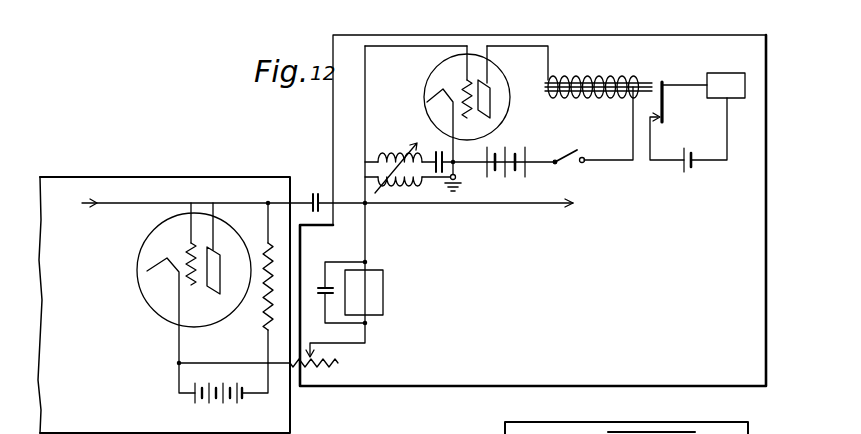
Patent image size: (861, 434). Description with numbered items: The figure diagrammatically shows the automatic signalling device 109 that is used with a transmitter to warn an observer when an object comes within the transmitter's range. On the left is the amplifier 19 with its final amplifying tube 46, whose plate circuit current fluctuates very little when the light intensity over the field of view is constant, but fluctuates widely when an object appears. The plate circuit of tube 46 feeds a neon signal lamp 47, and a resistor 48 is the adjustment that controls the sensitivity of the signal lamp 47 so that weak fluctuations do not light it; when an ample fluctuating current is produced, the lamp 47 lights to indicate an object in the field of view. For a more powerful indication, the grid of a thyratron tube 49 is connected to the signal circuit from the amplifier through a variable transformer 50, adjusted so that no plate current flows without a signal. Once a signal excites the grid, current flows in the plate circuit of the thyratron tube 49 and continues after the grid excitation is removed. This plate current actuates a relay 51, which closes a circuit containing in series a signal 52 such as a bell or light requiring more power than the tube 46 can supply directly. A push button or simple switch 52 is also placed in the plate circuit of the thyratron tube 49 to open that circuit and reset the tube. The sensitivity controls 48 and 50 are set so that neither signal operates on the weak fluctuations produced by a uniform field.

The signal 109 is at (595, 35).
The amplifier 19 is at (183, 176).
The final amplifying tube 46 is at (137, 260).
The signal lamp 47 is at (384, 292).
The resistor 48 is at (334, 365).
The thyratron tube 49 is at (510, 112).
The variable transformer 50 is at (378, 175).
The relay 51 is at (642, 77).
The signal / switch 52 is at (559, 156).